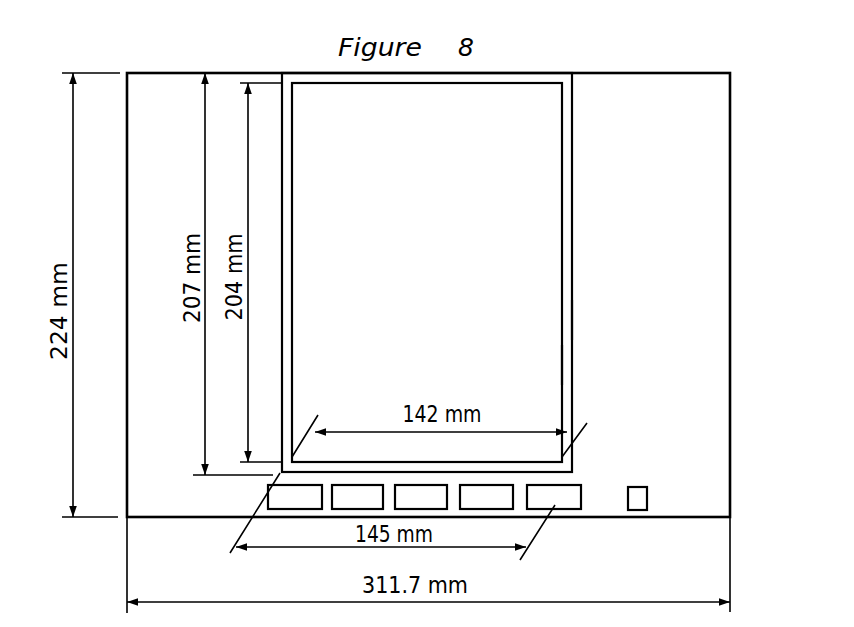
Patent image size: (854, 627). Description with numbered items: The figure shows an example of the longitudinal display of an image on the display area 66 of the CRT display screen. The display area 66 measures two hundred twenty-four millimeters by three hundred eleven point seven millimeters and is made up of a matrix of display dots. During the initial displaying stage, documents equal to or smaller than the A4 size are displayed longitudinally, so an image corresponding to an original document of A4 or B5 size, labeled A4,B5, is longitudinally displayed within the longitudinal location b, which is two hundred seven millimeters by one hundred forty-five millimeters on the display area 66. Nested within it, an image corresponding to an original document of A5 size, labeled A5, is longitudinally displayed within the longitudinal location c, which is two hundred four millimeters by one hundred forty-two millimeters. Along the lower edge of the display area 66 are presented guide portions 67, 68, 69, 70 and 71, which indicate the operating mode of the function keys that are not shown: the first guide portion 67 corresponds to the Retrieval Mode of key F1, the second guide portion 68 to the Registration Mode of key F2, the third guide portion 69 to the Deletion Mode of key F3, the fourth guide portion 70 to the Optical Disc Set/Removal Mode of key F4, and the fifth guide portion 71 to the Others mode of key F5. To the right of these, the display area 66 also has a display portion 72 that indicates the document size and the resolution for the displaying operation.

The display area 66 is at (717, 477).
The guide portion 67 is at (297, 517).
The guide portion 68 is at (340, 518).
The guide portion 69 is at (446, 518).
The guide portion 70 is at (487, 517).
The guide portion 71 is at (566, 485).
The display portion 72 is at (635, 521).
The A4 or B5 size original document image A4,B5 is at (708, 183).
The A5 size original document image A5 is at (562, 237).
The longitudinal location b is at (572, 320).
The longitudinal location c is at (562, 365).